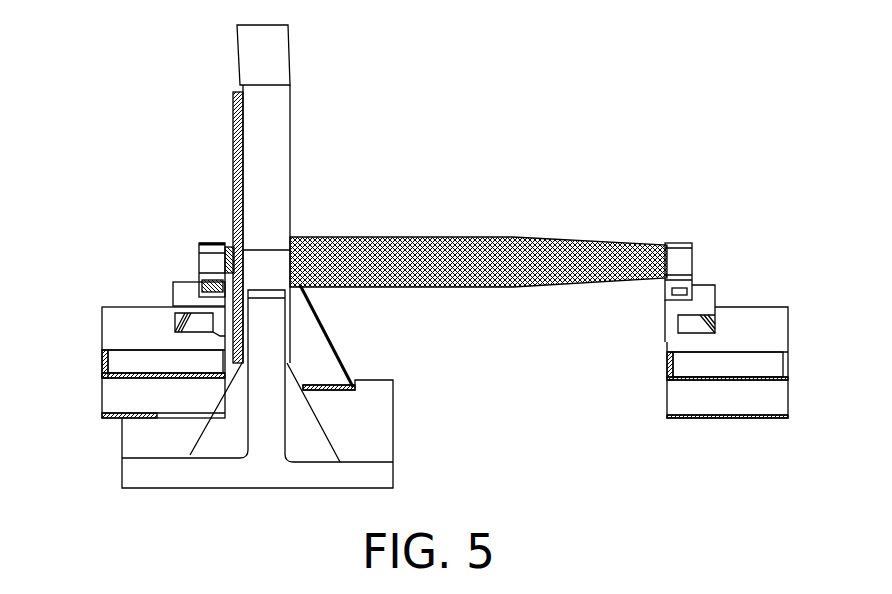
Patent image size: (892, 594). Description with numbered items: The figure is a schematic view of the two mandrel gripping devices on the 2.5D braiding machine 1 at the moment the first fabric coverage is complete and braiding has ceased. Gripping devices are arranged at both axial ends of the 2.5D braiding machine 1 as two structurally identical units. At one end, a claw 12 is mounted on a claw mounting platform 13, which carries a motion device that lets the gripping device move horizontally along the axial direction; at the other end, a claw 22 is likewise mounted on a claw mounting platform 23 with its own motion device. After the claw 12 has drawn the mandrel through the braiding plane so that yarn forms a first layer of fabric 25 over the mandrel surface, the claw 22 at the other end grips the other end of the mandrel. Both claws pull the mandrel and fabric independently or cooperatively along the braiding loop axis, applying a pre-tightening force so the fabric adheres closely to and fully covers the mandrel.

The 2.5D braiding machine 1 is at (263, 105).
The first layer of fabric 25 is at (398, 247).
The claw 22 is at (210, 265).
The claw mounting platform 23 is at (132, 328).
The claw 12 is at (683, 270).
The claw mounting platform 13 is at (750, 330).